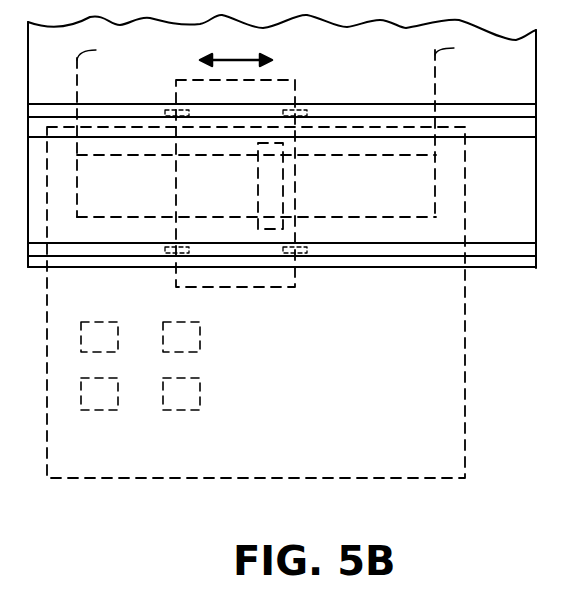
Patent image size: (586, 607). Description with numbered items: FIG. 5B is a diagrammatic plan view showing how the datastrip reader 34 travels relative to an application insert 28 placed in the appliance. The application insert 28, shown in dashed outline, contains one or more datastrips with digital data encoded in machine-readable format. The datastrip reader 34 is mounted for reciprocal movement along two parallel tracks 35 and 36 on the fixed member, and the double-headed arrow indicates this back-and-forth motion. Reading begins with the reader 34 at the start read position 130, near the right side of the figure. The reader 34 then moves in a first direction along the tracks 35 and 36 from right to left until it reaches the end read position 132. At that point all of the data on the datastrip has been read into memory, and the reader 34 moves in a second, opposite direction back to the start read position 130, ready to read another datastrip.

The application insert 28 is at (465, 352).
The datastrip reader 34 is at (258, 288).
The track 35 is at (370, 248).
The track 36 is at (356, 116).
The start read position 130 is at (435, 84).
The end read position 132 is at (77, 73).